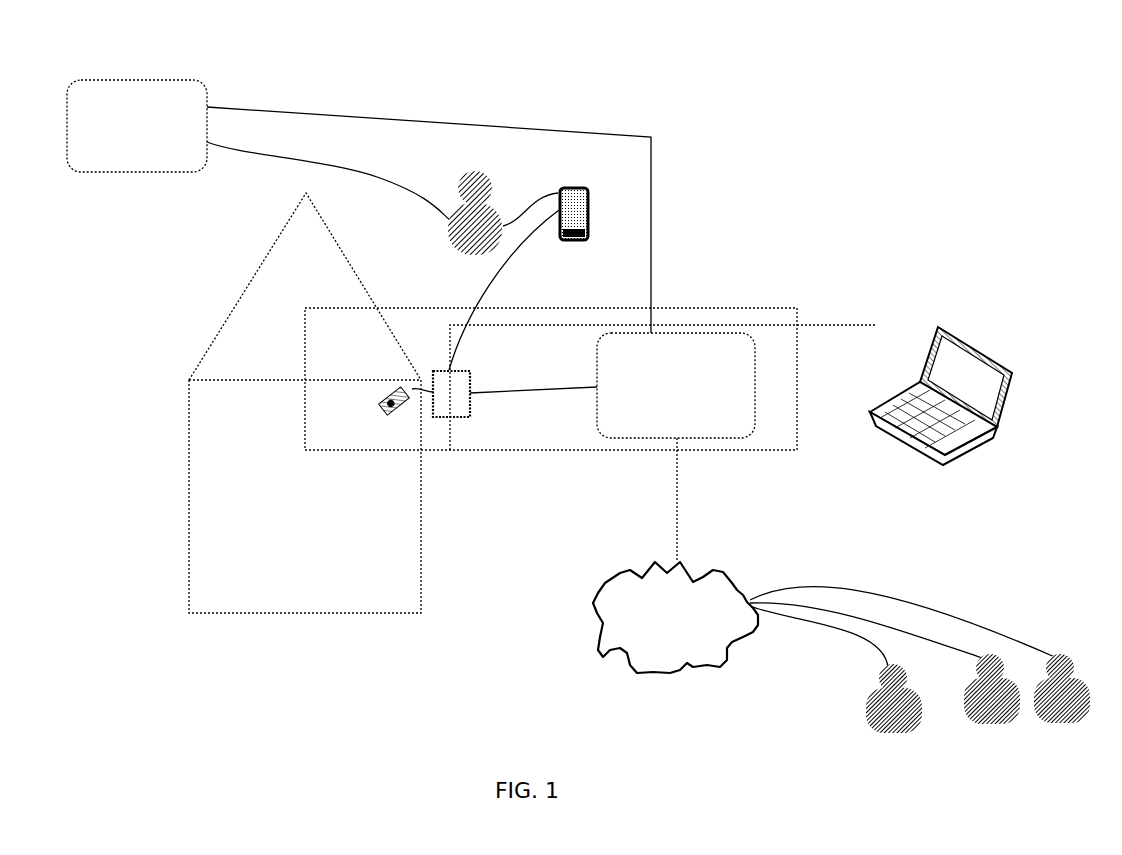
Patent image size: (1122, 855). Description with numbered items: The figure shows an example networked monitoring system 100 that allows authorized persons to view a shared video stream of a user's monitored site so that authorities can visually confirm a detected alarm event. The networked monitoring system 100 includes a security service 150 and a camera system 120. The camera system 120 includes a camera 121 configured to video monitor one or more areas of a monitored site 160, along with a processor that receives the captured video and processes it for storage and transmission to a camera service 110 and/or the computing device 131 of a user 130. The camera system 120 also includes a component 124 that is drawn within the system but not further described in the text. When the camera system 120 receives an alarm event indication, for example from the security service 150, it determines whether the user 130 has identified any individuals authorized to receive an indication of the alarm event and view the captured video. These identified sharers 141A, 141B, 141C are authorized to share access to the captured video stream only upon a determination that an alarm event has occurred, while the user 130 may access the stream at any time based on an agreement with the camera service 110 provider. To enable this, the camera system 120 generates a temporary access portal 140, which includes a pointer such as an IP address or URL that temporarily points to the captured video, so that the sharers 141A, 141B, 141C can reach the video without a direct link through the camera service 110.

The networked monitoring system 100 is at (584, 390).
The camera service 110 is at (676, 385).
The camera system 120 is at (590, 379).
The camera 121 is at (376, 404).
The base station 124 is at (451, 394).
The user 130 is at (461, 243).
The computing device 131 is at (591, 227).
The temporary access portal 140 is at (675, 617).
The sharer 141A is at (890, 710).
The sharer 141B is at (992, 703).
The sharer 141C is at (1068, 699).
The security service 150 is at (137, 126).
The monitored site 160 is at (305, 403).